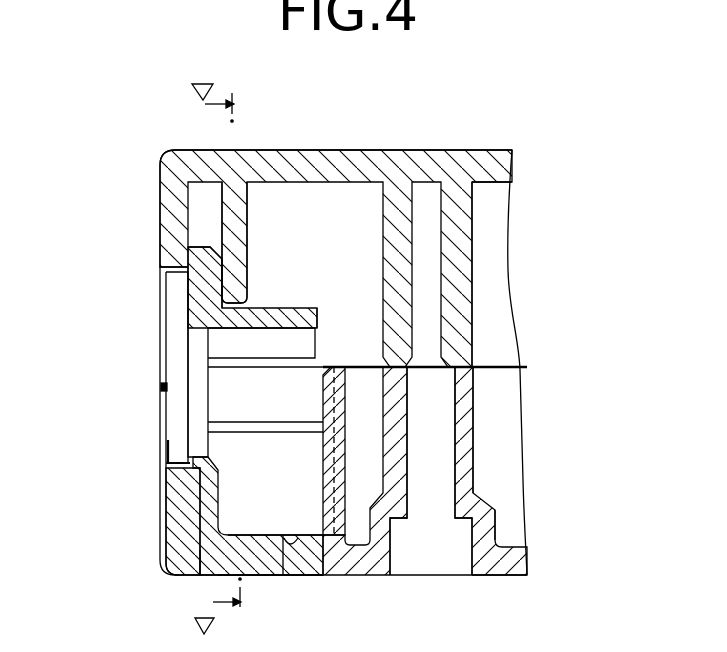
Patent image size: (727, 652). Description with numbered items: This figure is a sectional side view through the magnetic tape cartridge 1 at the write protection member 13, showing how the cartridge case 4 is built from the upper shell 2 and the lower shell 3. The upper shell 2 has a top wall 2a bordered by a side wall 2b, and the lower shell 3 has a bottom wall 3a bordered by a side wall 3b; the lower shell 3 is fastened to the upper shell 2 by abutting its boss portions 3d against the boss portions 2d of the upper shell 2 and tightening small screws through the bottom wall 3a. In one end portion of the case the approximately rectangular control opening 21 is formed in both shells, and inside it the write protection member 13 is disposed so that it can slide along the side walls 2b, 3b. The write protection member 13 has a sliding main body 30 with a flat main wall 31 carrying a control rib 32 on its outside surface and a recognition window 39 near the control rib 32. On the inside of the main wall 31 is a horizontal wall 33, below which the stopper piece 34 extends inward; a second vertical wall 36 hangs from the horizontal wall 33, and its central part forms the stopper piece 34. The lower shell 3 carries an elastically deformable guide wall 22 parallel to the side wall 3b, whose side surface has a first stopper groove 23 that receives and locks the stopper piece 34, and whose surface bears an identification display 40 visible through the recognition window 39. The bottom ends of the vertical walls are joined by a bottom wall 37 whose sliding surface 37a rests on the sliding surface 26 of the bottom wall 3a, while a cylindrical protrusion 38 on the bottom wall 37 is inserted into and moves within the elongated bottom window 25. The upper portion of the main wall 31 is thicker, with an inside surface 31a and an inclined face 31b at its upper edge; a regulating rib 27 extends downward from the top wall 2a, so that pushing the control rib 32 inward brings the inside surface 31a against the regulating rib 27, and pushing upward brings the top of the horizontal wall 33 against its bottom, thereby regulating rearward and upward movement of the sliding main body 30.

The magnetic tape cartridge 1 is at (449, 85).
The upper shell 2 is at (505, 249).
The top wall 2a is at (340, 148).
The side wall 2b is at (172, 206).
The boss portion 2d is at (470, 318).
The lower shell 3 is at (513, 472).
The bottom wall 3a is at (497, 565).
The side wall 3b is at (166, 514).
The boss portion 3d is at (470, 416).
The cartridge case 4 is at (155, 145).
The write protection member 13 is at (152, 316).
The control opening 21 is at (190, 457).
The guide wall 22 is at (337, 372).
The first stopper groove 23 is at (318, 458).
The bottom window 25 is at (202, 570).
The sliding surface 26 is at (308, 548).
The regulating rib 27 is at (240, 212).
The sliding main body 30 is at (322, 304).
The main wall 31 is at (192, 414).
The inside surface 31a is at (222, 284).
The inclined face 31b is at (210, 248).
The control rib 32 is at (174, 286).
The horizontal wall 33 is at (281, 307).
The stopper piece 34 is at (238, 387).
The second vertical wall 36 is at (192, 497).
The bottom wall 37 is at (202, 546).
The sliding surface 37a is at (292, 539).
The protrusion 38 is at (267, 560).
The recognition window 39 is at (161, 388).
The identification display 40 is at (324, 392).